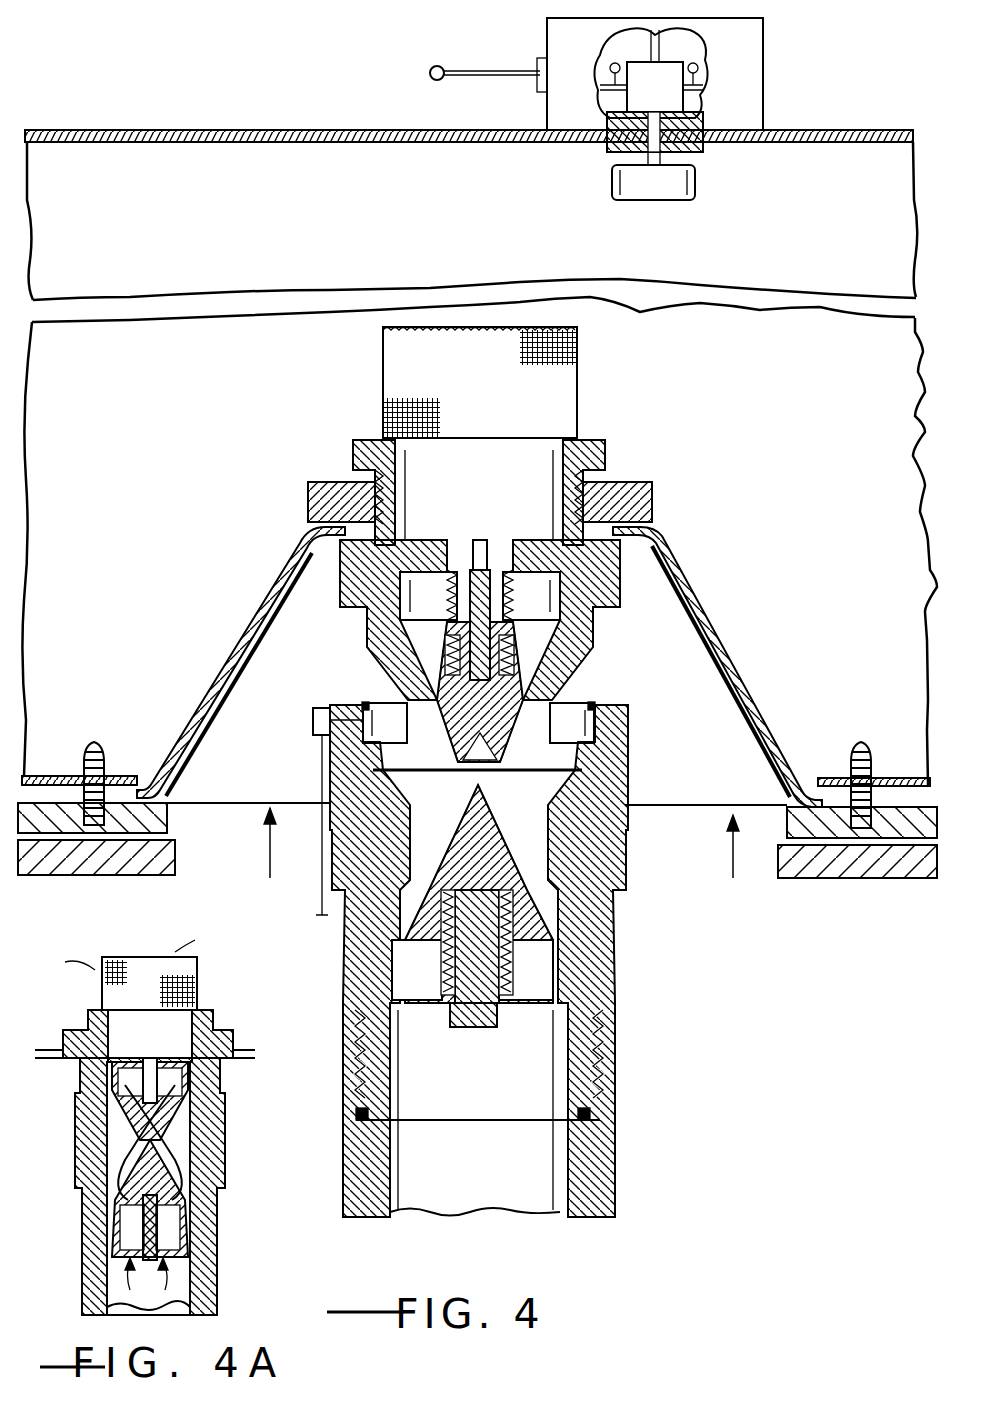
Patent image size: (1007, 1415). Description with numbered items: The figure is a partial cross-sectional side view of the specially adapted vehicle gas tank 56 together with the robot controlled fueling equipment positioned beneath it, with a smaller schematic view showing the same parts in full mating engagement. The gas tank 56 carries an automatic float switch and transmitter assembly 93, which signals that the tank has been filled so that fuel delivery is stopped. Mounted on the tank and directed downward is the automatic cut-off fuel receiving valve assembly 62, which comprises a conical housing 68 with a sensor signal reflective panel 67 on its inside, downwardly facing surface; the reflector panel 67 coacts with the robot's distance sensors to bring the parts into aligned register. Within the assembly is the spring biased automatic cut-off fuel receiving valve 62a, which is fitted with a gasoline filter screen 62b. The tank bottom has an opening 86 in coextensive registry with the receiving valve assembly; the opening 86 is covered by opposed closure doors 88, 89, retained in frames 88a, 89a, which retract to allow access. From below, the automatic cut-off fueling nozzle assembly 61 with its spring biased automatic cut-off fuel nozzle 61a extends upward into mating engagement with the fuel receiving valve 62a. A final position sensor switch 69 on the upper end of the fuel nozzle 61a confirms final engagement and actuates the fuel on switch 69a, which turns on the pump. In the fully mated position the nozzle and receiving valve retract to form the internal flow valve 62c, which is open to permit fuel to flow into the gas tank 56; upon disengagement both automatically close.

In FIG. 4, the automatic float switch and transmitter assembly 93 is at (770, 93).
In FIG. 4, the gas tank 56 is at (808, 128).
In FIG. 4, the gasoline filter screen 62b is at (577, 348).
In FIG. 4A, the gasoline filter screen 62b is at (200, 985).
In FIG. 4, the automatic cut-off fuel receiving valve assembly 62 is at (728, 583).
In FIG. 4, the automatic cut-off fuel receiving valve 62a is at (520, 678).
In FIG. 4A, the automatic cut-off fuel receiving valve 62a is at (173, 1112).
In FIG. 4, the internal flow valve 62c is at (510, 786).
In FIG. 4A, the internal flow valve 62c is at (143, 1285).
In FIG. 4, the automatic cut-off fueling nozzle assembly 61 is at (628, 985).
In FIG. 4, the automatic cut-off fuel nozzle 61a is at (530, 870).
In FIG. 4A, the automatic cut-off fuel nozzle 61a is at (160, 1187).
In FIG. 4, the conical housing 68 is at (245, 592).
In FIG. 4, the reflector panel 67 is at (262, 662).
In FIG. 4, the final position sensor switch 69 is at (366, 700).
In FIG. 4, the fuel on switch 69a is at (312, 725).
In FIG. 4, the opening 86 is at (477, 860).
In FIG. 4, the closure door 88 is at (112, 875).
In FIG. 4, the frame 88a is at (172, 822).
In FIG. 4, the closure door 89 is at (853, 878).
In FIG. 4, the frame 89a is at (787, 823).